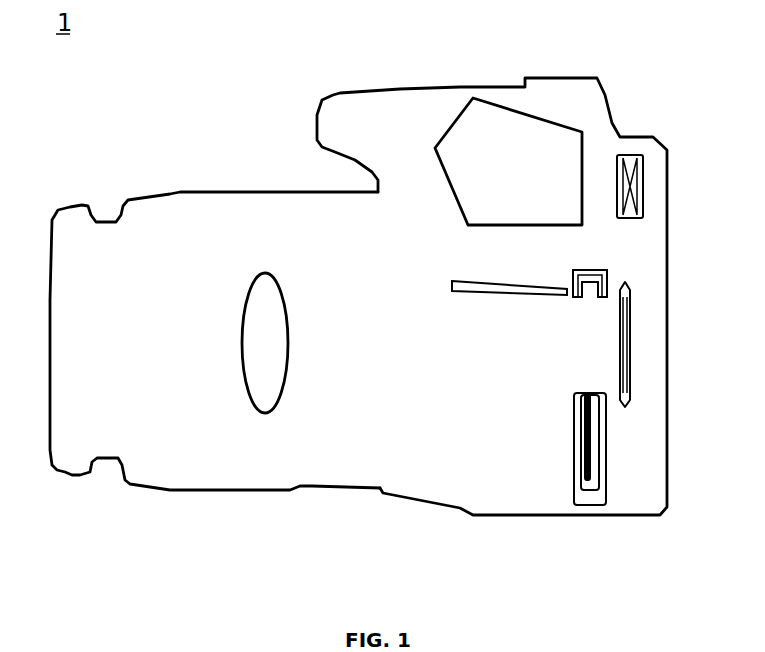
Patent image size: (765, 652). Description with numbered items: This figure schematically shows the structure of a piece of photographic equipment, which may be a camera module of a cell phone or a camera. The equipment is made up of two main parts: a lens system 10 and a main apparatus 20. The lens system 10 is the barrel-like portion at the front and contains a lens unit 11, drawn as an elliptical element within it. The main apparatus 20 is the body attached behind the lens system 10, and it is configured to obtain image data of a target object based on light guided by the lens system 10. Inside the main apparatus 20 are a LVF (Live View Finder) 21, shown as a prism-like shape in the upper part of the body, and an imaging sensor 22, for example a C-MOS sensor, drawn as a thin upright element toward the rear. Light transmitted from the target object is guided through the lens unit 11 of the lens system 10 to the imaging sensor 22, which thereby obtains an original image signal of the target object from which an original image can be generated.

The lens system 10 is at (182, 190).
The lens unit 11 is at (270, 308).
The main apparatus 20 is at (422, 87).
The LVF (Live View Finder) 21 is at (543, 153).
The imaging sensor 22 is at (627, 328).